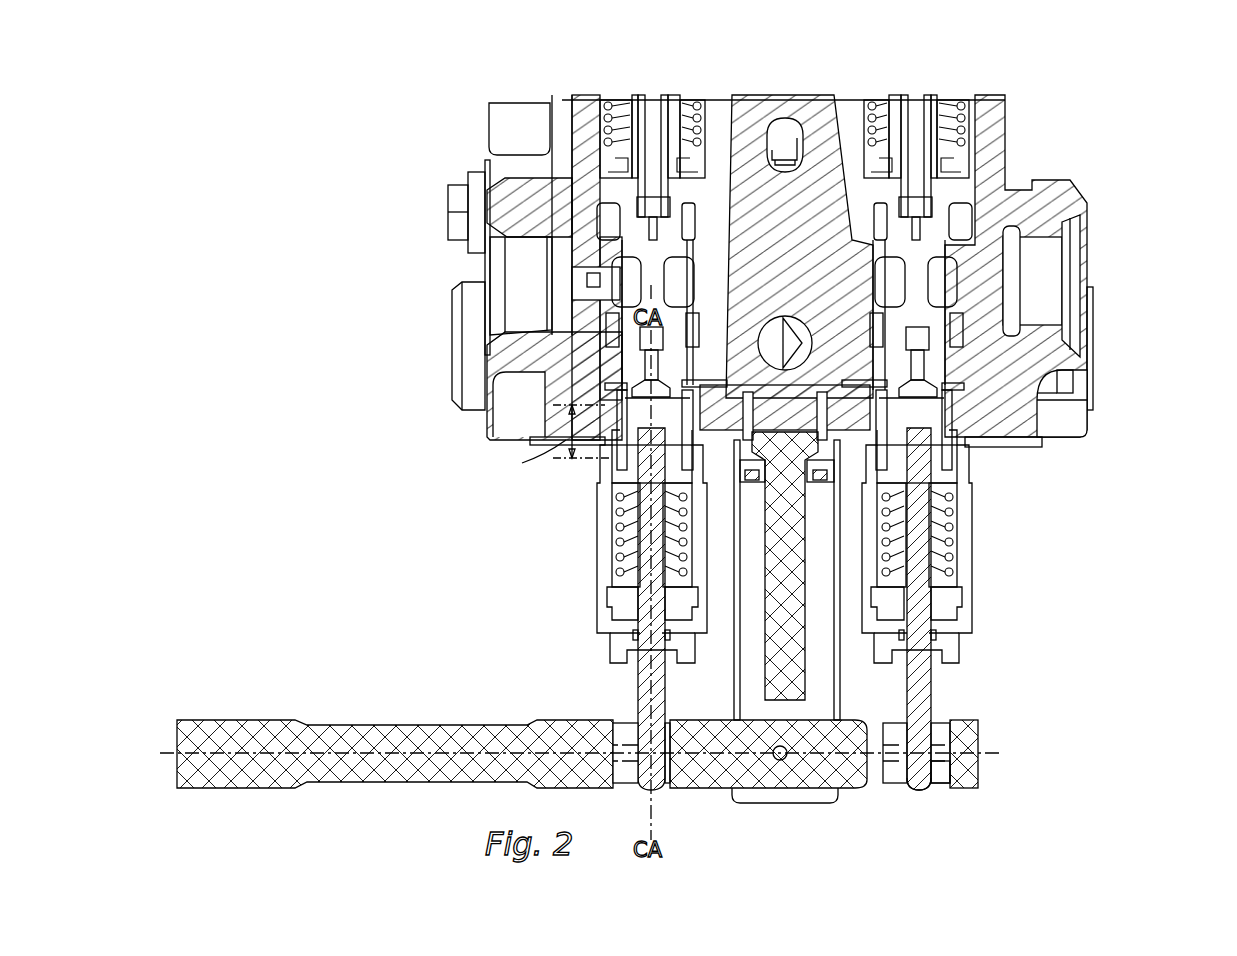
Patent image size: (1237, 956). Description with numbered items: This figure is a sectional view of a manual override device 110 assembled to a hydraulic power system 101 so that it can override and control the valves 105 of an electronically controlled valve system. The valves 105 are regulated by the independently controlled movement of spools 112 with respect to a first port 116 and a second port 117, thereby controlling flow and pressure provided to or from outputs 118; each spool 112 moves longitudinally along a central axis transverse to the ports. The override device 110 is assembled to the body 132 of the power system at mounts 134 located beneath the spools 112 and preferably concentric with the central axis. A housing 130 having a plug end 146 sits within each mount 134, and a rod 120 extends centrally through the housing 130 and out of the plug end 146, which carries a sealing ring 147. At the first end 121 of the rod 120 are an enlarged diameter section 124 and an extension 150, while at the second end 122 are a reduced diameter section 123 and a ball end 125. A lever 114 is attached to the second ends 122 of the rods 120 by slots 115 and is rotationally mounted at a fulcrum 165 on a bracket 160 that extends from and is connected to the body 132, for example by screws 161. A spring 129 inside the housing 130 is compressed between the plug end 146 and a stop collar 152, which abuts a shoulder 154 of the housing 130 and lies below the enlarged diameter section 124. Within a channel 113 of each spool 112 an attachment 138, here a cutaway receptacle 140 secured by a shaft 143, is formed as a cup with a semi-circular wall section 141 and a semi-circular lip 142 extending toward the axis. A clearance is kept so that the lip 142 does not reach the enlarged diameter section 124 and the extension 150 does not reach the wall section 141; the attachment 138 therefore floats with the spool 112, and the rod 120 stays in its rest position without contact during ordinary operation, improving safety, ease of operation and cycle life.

The hydraulic power system 101 is at (697, 438).
The valves 105 is at (792, 263).
The manual override device 110 is at (605, 728).
The spools 112 is at (632, 240).
The channel 113 is at (860, 266).
The lever 114 is at (216, 792).
The slots 115 is at (900, 757).
The first port 116 is at (452, 262).
The second port 117 is at (1100, 263).
The outputs 118 is at (840, 90).
The rod 120 is at (641, 693).
The first end 121 is at (894, 450).
The second end 122 is at (932, 802).
The reduced diameter section 123 is at (940, 752).
The enlarged diameter section 124 is at (971, 546).
The ball end 125 is at (932, 772).
The spring 129 is at (957, 520).
The housing 130 is at (606, 556).
The body 132 is at (596, 398).
The mounts 134 is at (606, 408).
The attachment 138 is at (1038, 390).
The cutaway receptacle 140 is at (1138, 358).
The semi-circular wall section 141 is at (1135, 395).
The semi-circular lip 142 is at (975, 456).
The shaft 143 is at (948, 368).
The plug end 146 is at (624, 623).
The sealing ring 147 is at (636, 636).
The extension 150 is at (1048, 393).
The stop collar 152 is at (957, 500).
The shoulder 154 is at (603, 551).
The bracket 160 is at (836, 572).
The screws 161 is at (770, 556).
The fulcrum 165 is at (782, 760).